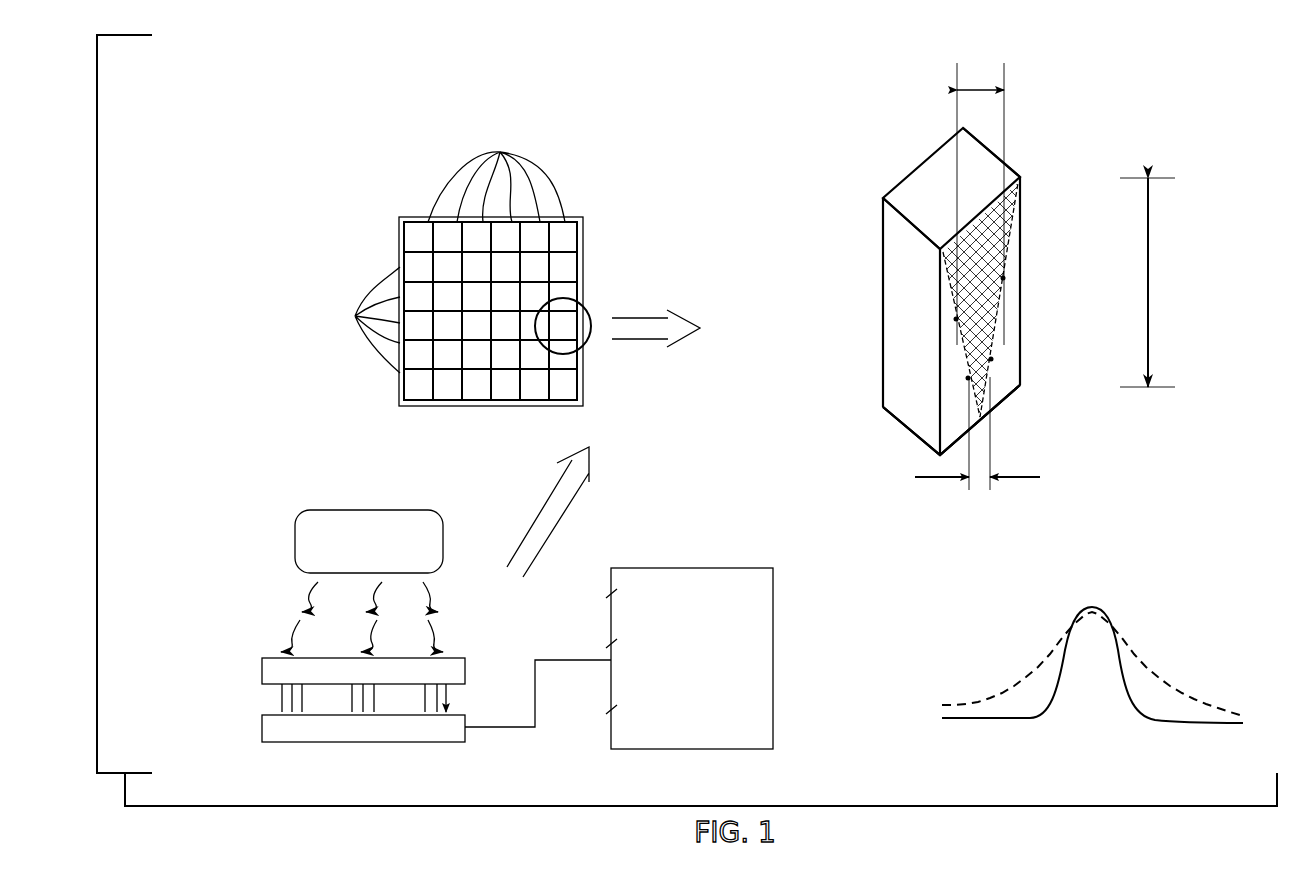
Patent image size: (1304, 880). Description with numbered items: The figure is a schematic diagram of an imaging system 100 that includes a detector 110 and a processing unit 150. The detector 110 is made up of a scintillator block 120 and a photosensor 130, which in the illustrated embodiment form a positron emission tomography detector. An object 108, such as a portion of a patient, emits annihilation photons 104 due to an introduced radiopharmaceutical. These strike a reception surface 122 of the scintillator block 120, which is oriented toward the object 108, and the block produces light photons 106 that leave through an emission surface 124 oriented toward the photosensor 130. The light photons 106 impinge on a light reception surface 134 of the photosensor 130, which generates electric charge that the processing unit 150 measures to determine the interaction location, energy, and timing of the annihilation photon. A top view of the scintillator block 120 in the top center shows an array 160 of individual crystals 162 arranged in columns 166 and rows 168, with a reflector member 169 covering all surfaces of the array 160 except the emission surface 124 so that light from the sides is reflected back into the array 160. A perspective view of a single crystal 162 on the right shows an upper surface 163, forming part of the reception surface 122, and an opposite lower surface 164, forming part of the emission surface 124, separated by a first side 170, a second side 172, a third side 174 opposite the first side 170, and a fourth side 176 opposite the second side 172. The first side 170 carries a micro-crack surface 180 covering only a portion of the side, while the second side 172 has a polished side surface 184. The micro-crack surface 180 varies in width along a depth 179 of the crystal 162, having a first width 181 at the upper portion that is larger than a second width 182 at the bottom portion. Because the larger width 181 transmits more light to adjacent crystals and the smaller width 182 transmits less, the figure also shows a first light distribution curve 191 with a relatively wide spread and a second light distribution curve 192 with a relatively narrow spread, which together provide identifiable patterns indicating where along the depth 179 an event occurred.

The imaging system 100 is at (255, 115).
The annihilation photons 104 is at (423, 590).
The light photons 106 is at (455, 695).
The object 108 is at (351, 556).
The detector 110 is at (208, 698).
The scintillator block 120 is at (253, 672).
The reception surface 122 is at (457, 657).
The emission surface 124 is at (265, 690).
The photosensor 130 is at (253, 735).
The light reception surface 134 is at (460, 713).
The processing unit 150 is at (671, 671).
The array 160 is at (387, 200).
The crystal 162 is at (573, 241).
The upper surface 163 is at (973, 160).
The lower surface 164 is at (908, 448).
The columns 166 is at (496, 175).
The rows 168 is at (357, 320).
The reflector member 169 is at (532, 406).
The first side 170 is at (1000, 390).
The second side 172 is at (900, 407).
The third side 174 is at (857, 236).
The fourth side 176 is at (1040, 228).
The depth 179 is at (1150, 292).
The micro-crack surface 180 is at (1022, 300).
The first width 181 is at (981, 84).
The second width 182 is at (976, 487).
The polished side surface 184 is at (888, 300).
The first light distribution curve 191 is at (1157, 652).
The second light distribution curve 192 is at (1123, 712).